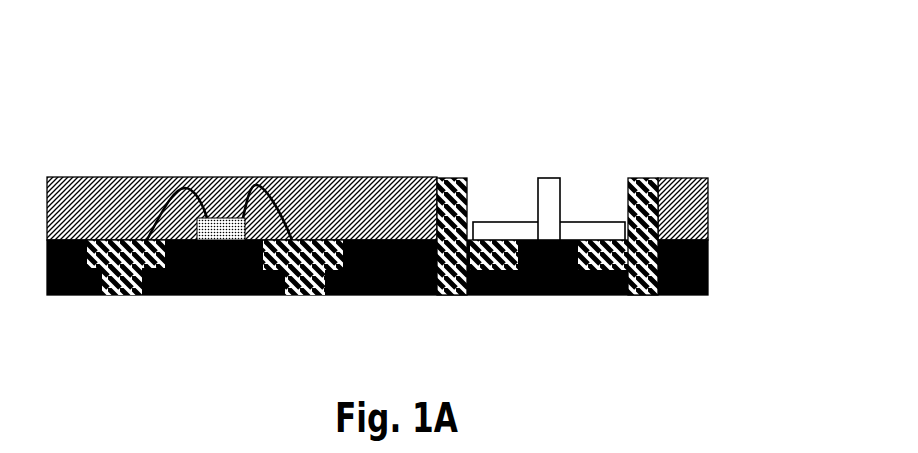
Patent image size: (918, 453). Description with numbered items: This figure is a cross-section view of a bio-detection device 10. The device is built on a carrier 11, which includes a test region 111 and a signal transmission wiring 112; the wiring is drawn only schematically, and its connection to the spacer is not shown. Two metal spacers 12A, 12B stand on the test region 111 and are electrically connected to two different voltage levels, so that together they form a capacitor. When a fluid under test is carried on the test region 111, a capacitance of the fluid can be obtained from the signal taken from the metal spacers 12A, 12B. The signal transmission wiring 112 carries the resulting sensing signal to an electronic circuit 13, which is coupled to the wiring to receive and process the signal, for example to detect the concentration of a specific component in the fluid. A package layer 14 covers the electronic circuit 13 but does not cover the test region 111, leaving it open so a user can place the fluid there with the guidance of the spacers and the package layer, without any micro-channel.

The bio-detection device 10 is at (73, 38).
The carrier 11 is at (685, 295).
The test region 111 is at (573, 222).
The signal transmission wiring 112 is at (307, 295).
The metal spacer 12A is at (547, 178).
The metal spacer 12B is at (460, 178).
The electronic circuit 13 is at (218, 218).
The package layer 14 is at (283, 198).